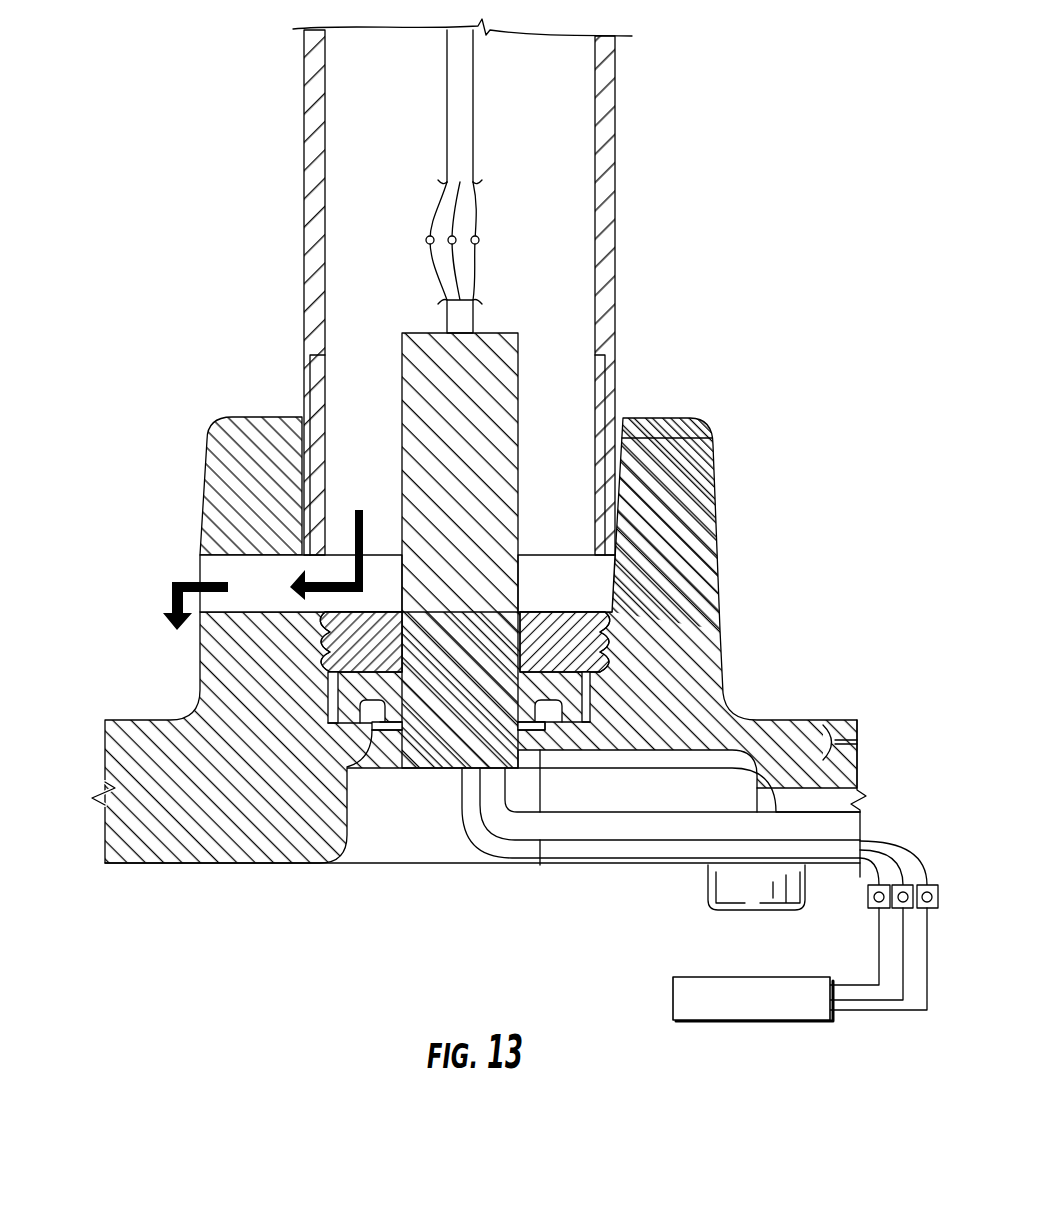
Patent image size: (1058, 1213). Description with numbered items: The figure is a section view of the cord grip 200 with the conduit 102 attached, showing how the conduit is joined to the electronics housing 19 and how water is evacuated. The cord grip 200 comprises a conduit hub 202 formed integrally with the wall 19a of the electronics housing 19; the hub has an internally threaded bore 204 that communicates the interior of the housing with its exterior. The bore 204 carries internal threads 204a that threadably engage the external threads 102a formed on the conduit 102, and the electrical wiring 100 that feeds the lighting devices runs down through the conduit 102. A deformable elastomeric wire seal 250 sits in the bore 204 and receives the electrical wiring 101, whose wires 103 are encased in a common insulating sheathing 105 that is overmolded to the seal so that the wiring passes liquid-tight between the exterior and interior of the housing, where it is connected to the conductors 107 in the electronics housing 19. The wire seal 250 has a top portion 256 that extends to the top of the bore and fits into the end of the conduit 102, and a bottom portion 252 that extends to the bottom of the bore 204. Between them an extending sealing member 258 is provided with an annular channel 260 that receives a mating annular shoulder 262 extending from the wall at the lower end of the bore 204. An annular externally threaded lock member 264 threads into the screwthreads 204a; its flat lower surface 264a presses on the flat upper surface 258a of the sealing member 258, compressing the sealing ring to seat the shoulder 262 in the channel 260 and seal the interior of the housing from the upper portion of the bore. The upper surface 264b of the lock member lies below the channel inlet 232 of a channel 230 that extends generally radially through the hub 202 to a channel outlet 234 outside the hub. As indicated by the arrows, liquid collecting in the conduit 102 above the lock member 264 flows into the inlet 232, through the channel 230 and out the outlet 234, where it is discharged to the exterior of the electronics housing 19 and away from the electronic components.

The electronics housing 19 is at (202, 870).
The wall of the electronics housing 19a is at (790, 720).
The electrical wiring 100 is at (459, 181).
The electrical wiring 101 is at (485, 247).
The conduit 102 is at (617, 122).
The external threads 102a is at (617, 380).
The wires 103 is at (430, 230).
The common insulating sheathing 105 is at (447, 310).
The conductors 107 is at (852, 898).
The cord grip 200 is at (138, 345).
The conduit hub 202 is at (717, 524).
The threaded bore 204 is at (300, 417).
The internal threads 204a is at (712, 438).
The channel 230 is at (265, 570).
The channel inlet 232 is at (300, 530).
The channel outlet 234 is at (200, 573).
The wire seal 250 is at (424, 606).
The bottom portion 252 is at (437, 755).
The top portion 256 is at (413, 478).
The sealing member 258 is at (353, 698).
The flat upper surface of sealing member 258a is at (590, 690).
The annular channel 260 is at (565, 705).
The annular shoulder 262 is at (367, 713).
The lock member 264 is at (456, 592).
The flat lower surface of lock member 264a is at (363, 665).
The upper surface of lock member 264b is at (543, 700).